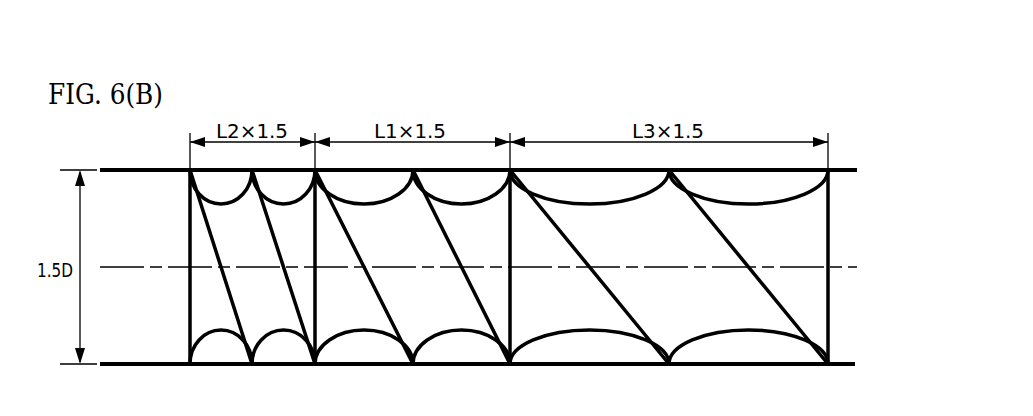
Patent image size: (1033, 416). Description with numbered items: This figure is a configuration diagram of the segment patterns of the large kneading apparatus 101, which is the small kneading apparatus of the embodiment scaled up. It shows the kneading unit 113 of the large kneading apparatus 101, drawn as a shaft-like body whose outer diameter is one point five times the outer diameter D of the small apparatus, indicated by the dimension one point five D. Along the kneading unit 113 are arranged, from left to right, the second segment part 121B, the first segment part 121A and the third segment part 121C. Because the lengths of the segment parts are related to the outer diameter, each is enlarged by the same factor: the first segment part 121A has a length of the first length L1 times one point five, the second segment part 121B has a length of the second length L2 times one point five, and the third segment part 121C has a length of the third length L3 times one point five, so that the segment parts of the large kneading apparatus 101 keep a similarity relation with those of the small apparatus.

The large kneading apparatus 101 is at (799, 85).
The kneading unit 113 is at (830, 153).
The first segment part 121A is at (357, 334).
The second segment part 121B is at (285, 334).
The third segment part 121C is at (707, 336).